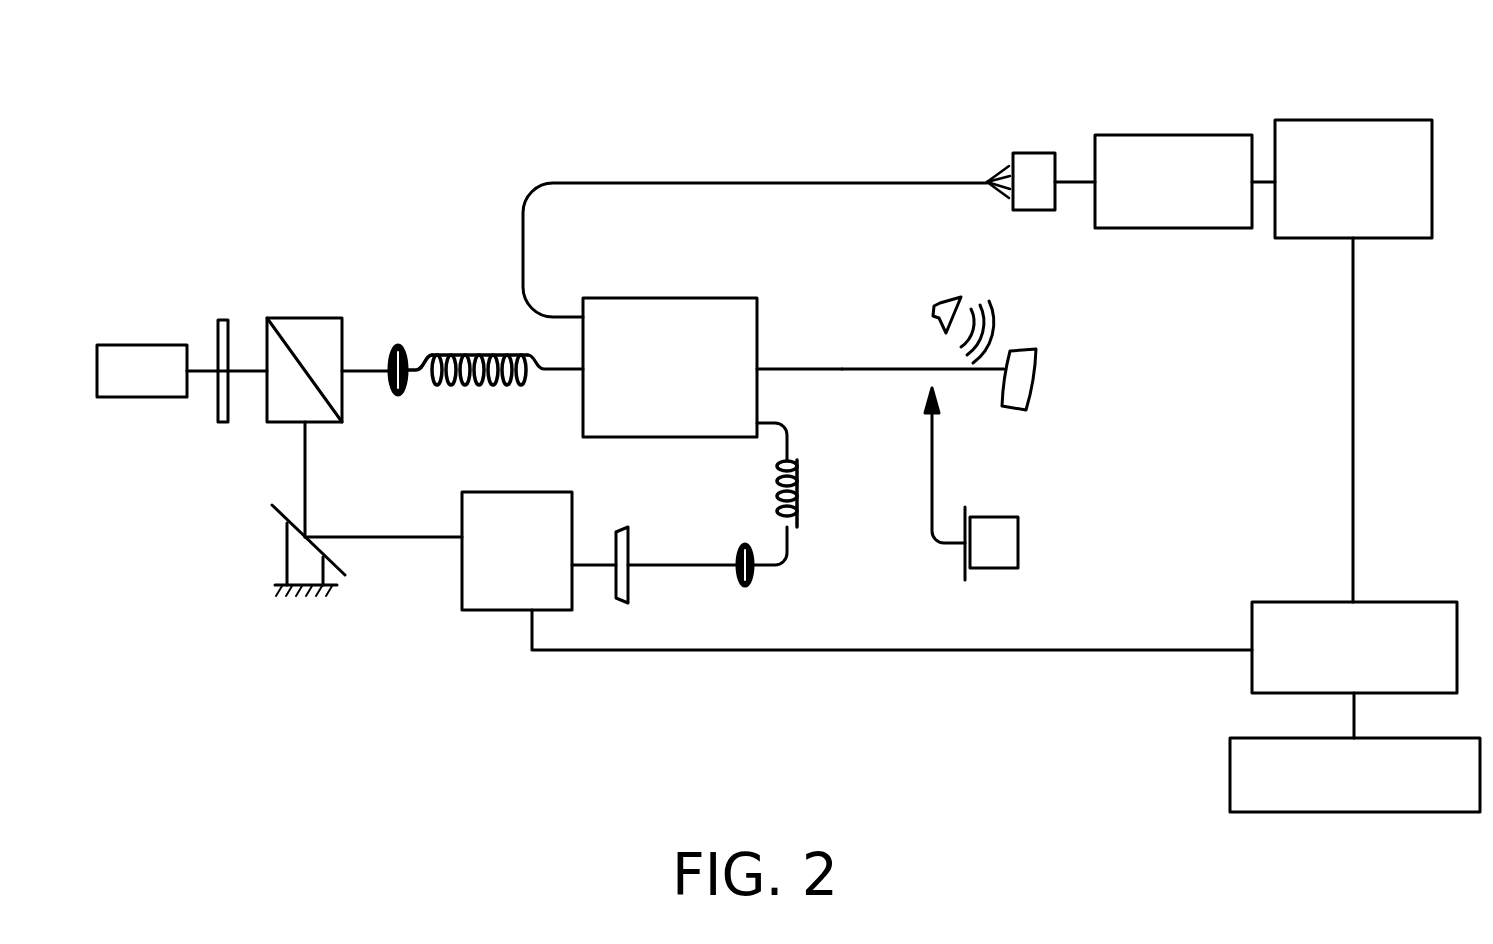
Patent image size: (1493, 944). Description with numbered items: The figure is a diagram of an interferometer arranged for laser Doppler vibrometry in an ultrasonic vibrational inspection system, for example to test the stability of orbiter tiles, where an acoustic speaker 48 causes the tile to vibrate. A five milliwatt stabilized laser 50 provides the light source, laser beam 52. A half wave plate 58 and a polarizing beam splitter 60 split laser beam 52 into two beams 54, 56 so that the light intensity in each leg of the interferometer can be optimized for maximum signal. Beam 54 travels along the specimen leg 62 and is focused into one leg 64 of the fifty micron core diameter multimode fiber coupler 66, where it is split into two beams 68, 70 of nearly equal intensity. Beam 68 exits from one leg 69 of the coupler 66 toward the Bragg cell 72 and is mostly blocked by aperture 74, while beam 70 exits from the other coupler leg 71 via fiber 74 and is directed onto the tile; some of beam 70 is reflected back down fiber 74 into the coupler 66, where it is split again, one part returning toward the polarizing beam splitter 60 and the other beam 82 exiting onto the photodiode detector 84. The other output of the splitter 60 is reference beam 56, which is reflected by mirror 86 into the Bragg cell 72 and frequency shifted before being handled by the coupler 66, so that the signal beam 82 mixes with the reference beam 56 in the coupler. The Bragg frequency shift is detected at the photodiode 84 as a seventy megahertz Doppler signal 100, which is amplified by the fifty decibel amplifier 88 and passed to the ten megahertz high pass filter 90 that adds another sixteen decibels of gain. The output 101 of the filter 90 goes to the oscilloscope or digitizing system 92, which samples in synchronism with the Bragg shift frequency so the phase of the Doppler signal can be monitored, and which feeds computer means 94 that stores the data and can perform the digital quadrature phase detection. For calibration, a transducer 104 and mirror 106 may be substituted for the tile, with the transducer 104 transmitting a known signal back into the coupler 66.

The acoustic speaker 48 is at (953, 305).
The stabilized laser 50 is at (152, 345).
The laser beam 52 is at (207, 377).
The signal beam 54 is at (362, 368).
The reference beam 56 is at (307, 470).
The half wave plate 58 is at (232, 400).
The polarizing beam splitter 60 is at (300, 317).
The specimen leg 62 is at (473, 347).
The coupler leg 64 is at (580, 387).
The multimode fiber coupler 66 is at (713, 298).
The beam toward Bragg cell 68 is at (790, 437).
The coupler leg 69 is at (760, 417).
The beam directed onto tile 70 is at (842, 368).
The coupler leg 71 is at (763, 365).
The Bragg cell 72 is at (462, 588).
The aperture 74 is at (897, 369).
The signal beam to detector 82 is at (658, 183).
The photodiode detector 84 is at (1033, 153).
The mirror 86 is at (332, 557).
The amplifier 88 is at (1185, 135).
The high pass filter 90 is at (1347, 120).
The oscilloscope or digitizing system 92 is at (1377, 602).
The computer means 94 is at (1240, 738).
The Doppler signal 100 is at (1072, 183).
The filter output 101 is at (1354, 408).
The transducer 104 is at (1018, 547).
The mirror 106 is at (966, 555).